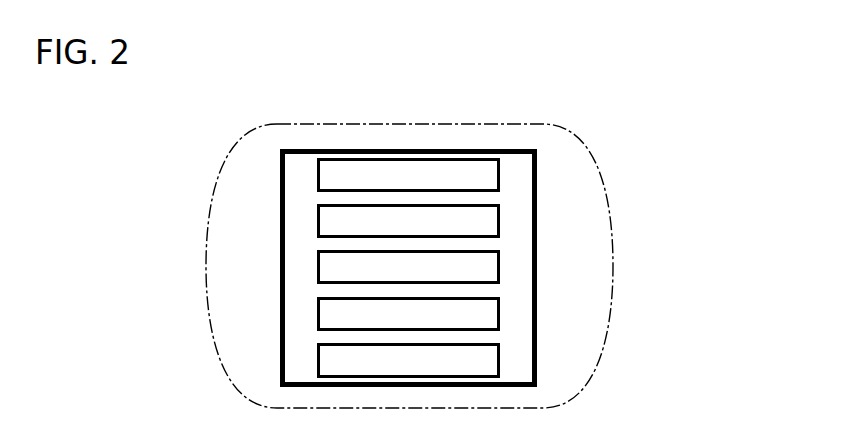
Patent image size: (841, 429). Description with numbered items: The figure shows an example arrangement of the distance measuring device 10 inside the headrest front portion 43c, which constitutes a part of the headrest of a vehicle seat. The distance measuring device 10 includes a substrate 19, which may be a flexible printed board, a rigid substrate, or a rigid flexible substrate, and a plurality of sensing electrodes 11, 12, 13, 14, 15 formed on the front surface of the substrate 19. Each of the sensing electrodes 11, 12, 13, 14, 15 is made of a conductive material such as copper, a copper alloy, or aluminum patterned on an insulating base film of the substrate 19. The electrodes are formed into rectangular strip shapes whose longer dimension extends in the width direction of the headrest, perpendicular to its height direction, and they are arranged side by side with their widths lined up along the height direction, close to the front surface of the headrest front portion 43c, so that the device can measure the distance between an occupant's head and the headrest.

The distance measuring device 10 is at (420, 149).
The substrate 19 is at (480, 148).
The sensing electrode 11 is at (487, 360).
The sensing electrode 12 is at (487, 313).
The sensing electrode 13 is at (487, 266).
The sensing electrode 14 is at (487, 218).
The sensing electrode 15 is at (487, 173).
The headrest front portion 43c is at (207, 271).